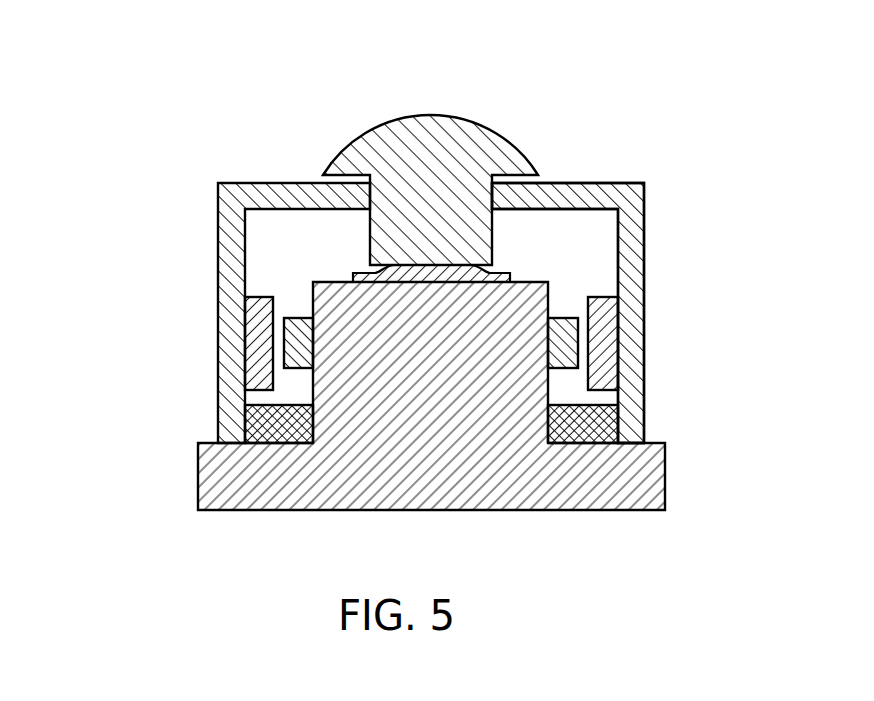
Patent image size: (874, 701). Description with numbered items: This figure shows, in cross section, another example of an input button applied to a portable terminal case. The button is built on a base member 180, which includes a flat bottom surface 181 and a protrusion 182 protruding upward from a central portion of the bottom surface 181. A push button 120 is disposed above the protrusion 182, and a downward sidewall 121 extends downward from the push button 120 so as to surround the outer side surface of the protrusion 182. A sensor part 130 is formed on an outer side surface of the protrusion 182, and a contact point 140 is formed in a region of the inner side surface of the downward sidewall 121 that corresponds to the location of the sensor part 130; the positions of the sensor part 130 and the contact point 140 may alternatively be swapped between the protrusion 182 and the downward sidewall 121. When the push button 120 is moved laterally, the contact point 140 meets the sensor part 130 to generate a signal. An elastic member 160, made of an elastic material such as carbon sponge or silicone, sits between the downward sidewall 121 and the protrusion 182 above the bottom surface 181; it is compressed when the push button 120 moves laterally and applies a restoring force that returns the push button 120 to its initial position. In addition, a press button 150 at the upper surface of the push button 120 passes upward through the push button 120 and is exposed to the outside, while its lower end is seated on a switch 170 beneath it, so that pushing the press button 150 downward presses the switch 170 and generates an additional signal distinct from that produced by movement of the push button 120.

The push button 120 is at (597, 175).
The downward sidewall 121 is at (645, 269).
The sensor part 130 is at (607, 365).
The contact point 140 is at (565, 330).
The press button 150 is at (445, 130).
The elastic member 160 is at (607, 423).
The switch 170 is at (413, 270).
The base member 180 is at (349, 396).
The bottom surface 181 is at (217, 467).
The protrusion 182 is at (333, 385).